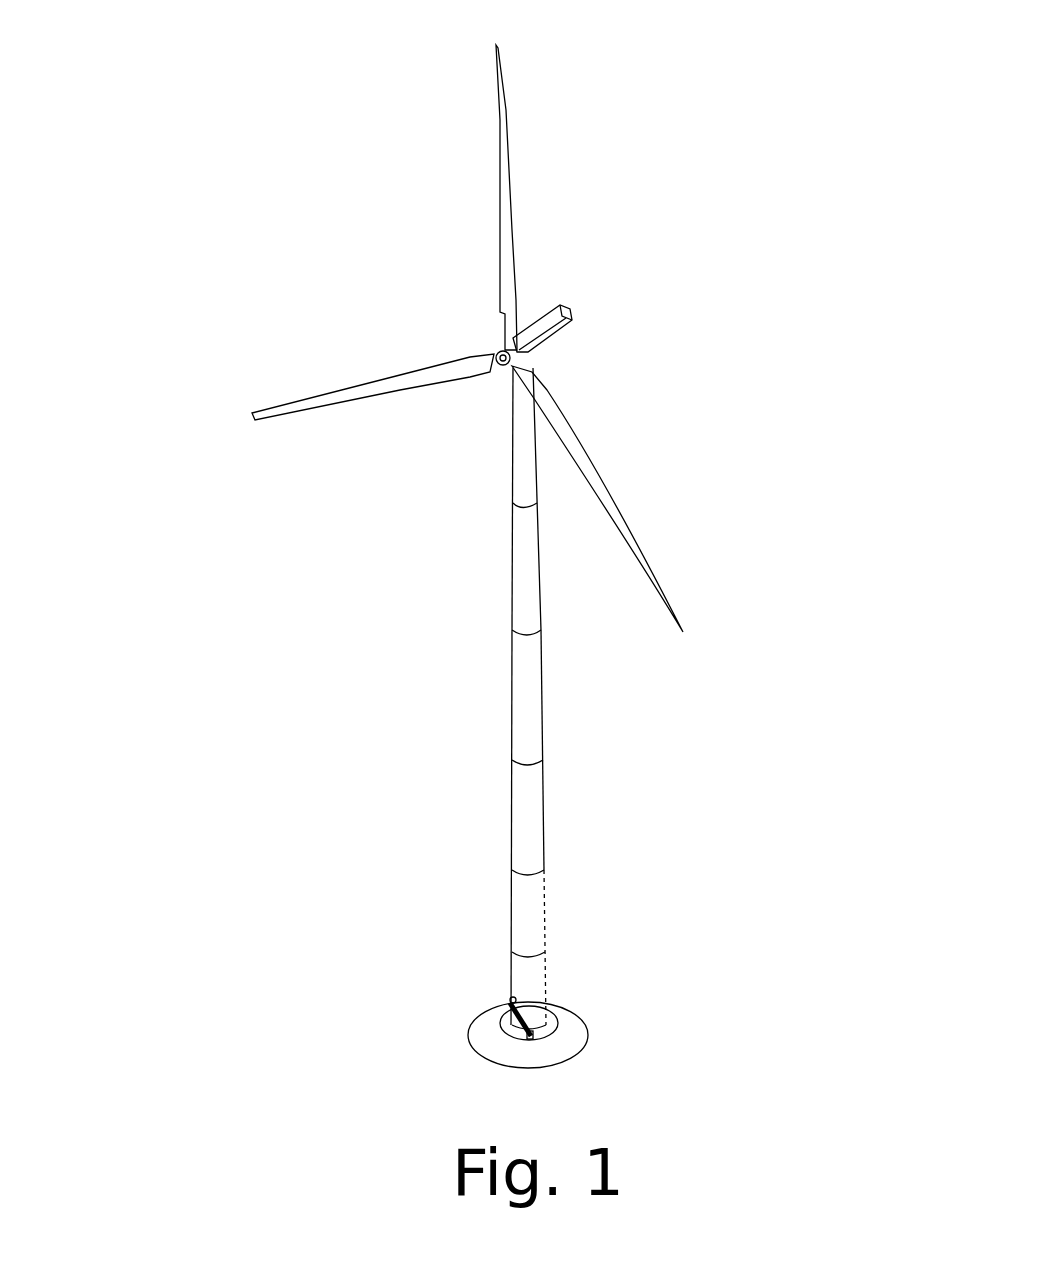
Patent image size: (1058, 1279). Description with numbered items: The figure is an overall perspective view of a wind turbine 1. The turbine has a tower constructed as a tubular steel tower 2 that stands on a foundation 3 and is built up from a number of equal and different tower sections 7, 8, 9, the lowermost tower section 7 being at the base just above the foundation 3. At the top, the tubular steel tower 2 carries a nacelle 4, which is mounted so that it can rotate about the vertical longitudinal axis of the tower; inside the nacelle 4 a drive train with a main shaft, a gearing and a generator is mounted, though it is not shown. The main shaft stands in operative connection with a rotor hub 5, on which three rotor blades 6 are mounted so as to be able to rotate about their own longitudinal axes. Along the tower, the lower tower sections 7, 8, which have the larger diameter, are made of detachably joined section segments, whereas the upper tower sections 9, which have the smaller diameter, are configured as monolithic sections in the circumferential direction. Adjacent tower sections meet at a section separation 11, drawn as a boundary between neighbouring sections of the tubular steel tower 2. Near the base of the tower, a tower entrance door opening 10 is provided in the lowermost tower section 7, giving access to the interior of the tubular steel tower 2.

The wind turbine 1 is at (608, 243).
The tubular steel tower 2 is at (611, 786).
The foundation 3 is at (565, 1018).
The nacelle 4 is at (547, 332).
The rotor hub 5 is at (503, 363).
The rotor blade 6 is at (509, 247).
The tower section 7 is at (525, 982).
The tower section 8 is at (524, 678).
The tower section 9 is at (524, 452).
The tower entrance door opening 10 is at (512, 1002).
The section separation 11 is at (545, 860).